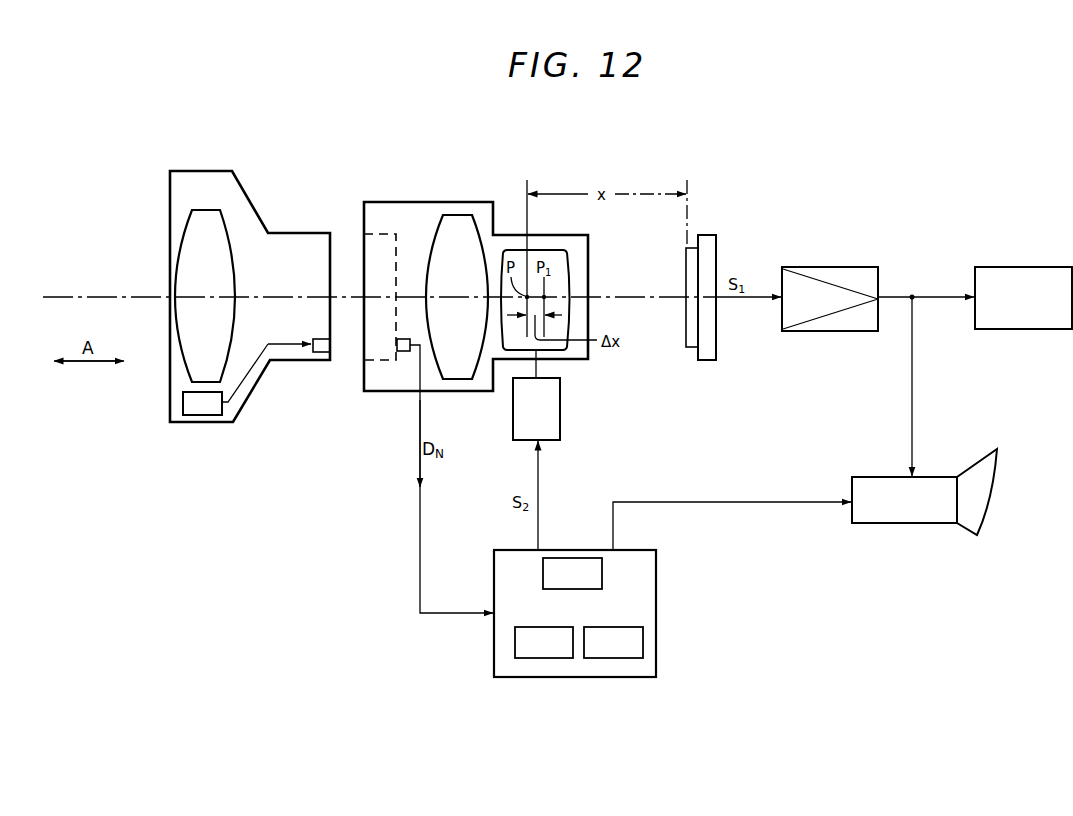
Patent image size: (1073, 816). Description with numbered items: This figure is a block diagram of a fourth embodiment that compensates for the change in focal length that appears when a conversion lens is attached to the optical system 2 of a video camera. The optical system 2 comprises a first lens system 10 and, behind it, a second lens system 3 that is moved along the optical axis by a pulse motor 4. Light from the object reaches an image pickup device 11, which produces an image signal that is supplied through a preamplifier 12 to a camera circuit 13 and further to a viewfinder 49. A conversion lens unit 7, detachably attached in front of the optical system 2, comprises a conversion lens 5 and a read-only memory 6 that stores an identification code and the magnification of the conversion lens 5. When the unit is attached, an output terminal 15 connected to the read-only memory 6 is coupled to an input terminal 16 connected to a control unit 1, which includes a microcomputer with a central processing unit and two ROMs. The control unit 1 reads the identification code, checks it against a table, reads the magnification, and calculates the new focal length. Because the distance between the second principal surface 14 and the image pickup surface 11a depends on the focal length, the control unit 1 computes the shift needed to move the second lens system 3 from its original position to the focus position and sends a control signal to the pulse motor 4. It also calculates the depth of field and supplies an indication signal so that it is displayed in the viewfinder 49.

The control unit 1 is at (658, 575).
The optical system 2 is at (393, 201).
The second lens system 3 is at (567, 263).
The pulse motor 4 is at (562, 398).
The conversion lens 5 is at (185, 258).
The read-only memory 6 is at (198, 415).
The conversion lens unit 7 is at (200, 170).
The first lens system 10 is at (456, 215).
The image pickup device 11 is at (691, 245).
The image pickup surface 11a is at (686, 322).
The preamplifier 12 is at (828, 267).
The camera circuit 13 is at (1024, 267).
The second principal surface 14 is at (523, 202).
The output terminal 15 is at (323, 352).
The input terminal 16 is at (400, 352).
The viewfinder 49 is at (895, 523).